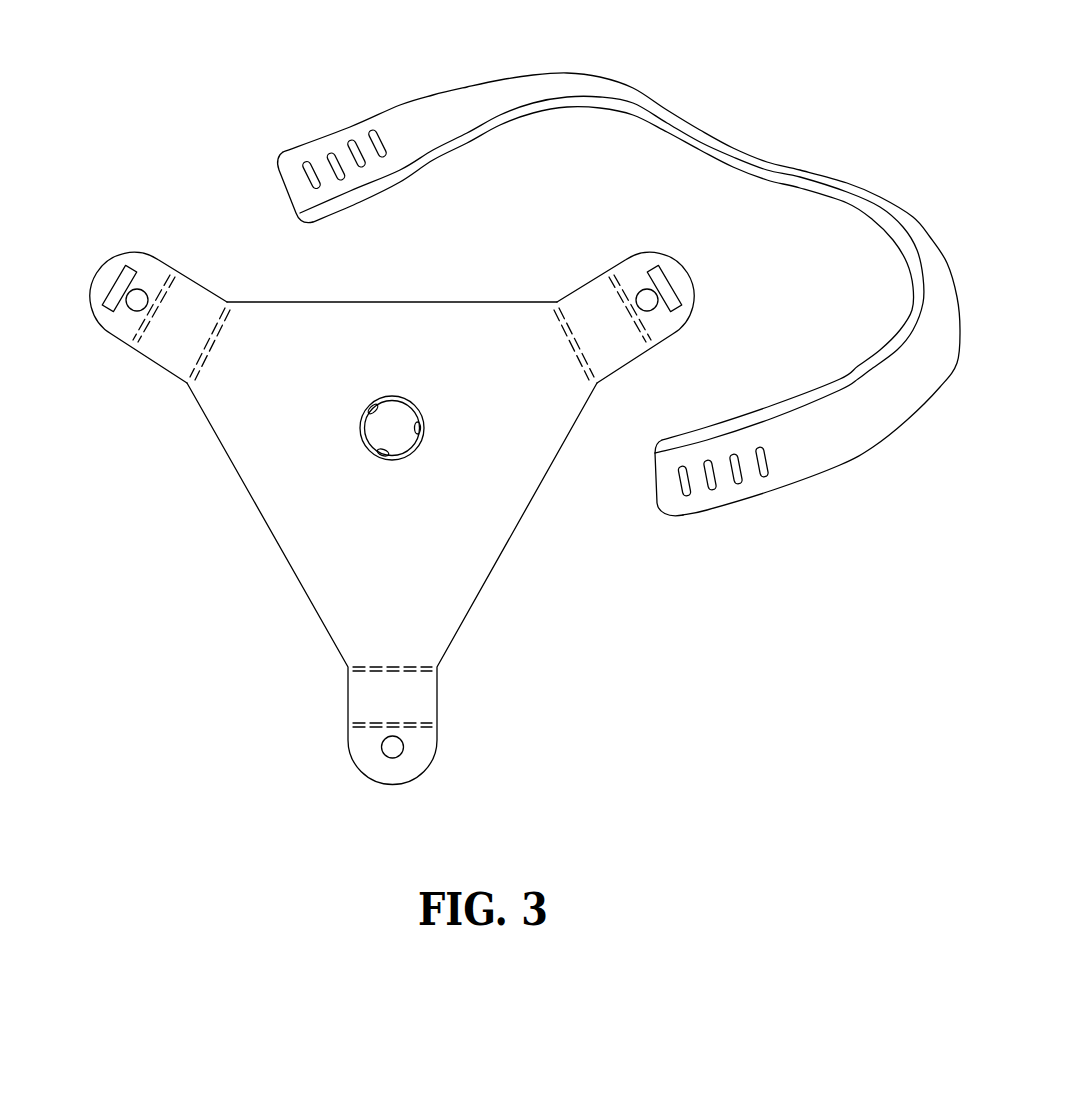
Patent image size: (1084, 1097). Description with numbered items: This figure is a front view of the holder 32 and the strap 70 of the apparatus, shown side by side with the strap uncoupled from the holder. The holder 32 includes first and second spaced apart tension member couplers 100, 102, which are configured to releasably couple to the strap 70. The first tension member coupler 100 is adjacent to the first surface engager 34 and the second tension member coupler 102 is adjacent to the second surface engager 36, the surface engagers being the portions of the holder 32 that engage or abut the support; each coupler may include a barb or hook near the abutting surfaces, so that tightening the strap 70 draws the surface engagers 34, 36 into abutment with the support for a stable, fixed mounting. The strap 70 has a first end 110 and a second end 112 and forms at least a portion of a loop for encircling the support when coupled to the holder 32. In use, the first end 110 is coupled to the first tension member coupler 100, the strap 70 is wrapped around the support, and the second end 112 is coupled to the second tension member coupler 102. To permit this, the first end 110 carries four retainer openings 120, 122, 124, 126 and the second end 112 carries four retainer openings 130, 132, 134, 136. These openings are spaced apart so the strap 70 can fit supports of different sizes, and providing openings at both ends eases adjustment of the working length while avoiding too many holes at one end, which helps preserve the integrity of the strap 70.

The holder 32 is at (226, 528).
The first surface engager 34 is at (153, 268).
The second surface engager 36 is at (638, 270).
The strap 70 is at (572, 84).
The first tension member coupler 100 is at (136, 287).
The second tension member coupler 102 is at (647, 287).
The first end 110 is at (289, 122).
The second end 112 is at (715, 526).
The retainer opening 120 is at (372, 131).
The retainer opening 122 is at (350, 141).
The retainer opening 124 is at (329, 153).
The retainer opening 126 is at (306, 162).
The retainer opening 130 is at (767, 480).
The retainer opening 132 is at (740, 486).
The retainer opening 134 is at (713, 492).
The retainer opening 136 is at (688, 498).